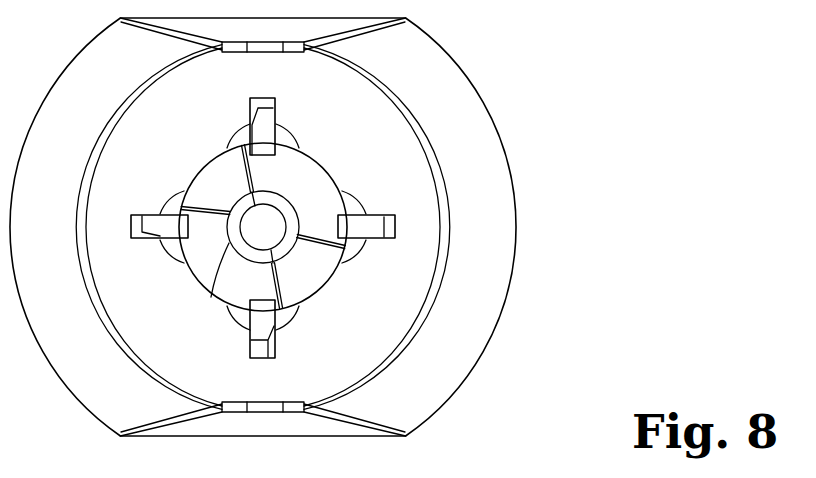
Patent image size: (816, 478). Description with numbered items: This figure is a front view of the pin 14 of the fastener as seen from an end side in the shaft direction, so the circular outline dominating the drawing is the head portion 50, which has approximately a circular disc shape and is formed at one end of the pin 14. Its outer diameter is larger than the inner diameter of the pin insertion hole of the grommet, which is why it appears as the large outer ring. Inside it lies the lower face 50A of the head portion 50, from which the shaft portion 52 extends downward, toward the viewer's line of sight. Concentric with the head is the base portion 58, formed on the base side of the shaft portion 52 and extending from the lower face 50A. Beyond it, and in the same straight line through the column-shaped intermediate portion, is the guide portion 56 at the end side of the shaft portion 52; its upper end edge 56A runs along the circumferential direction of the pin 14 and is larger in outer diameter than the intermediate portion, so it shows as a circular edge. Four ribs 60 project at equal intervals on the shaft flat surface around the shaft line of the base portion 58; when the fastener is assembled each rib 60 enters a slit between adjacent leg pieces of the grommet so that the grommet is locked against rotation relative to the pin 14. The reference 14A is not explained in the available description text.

The pin 14 is at (486, 63).
The rotary shaft 14A is at (250, 236).
The head portion 50 is at (516, 190).
The lower face of the head portion 50A is at (491, 259).
The shaft portion 52 is at (193, 128).
The guide portion 56 is at (313, 202).
The upper end edge of the guide portion 56A is at (302, 150).
The base portion 58 is at (322, 157).
The ribs 60 is at (250, 108).